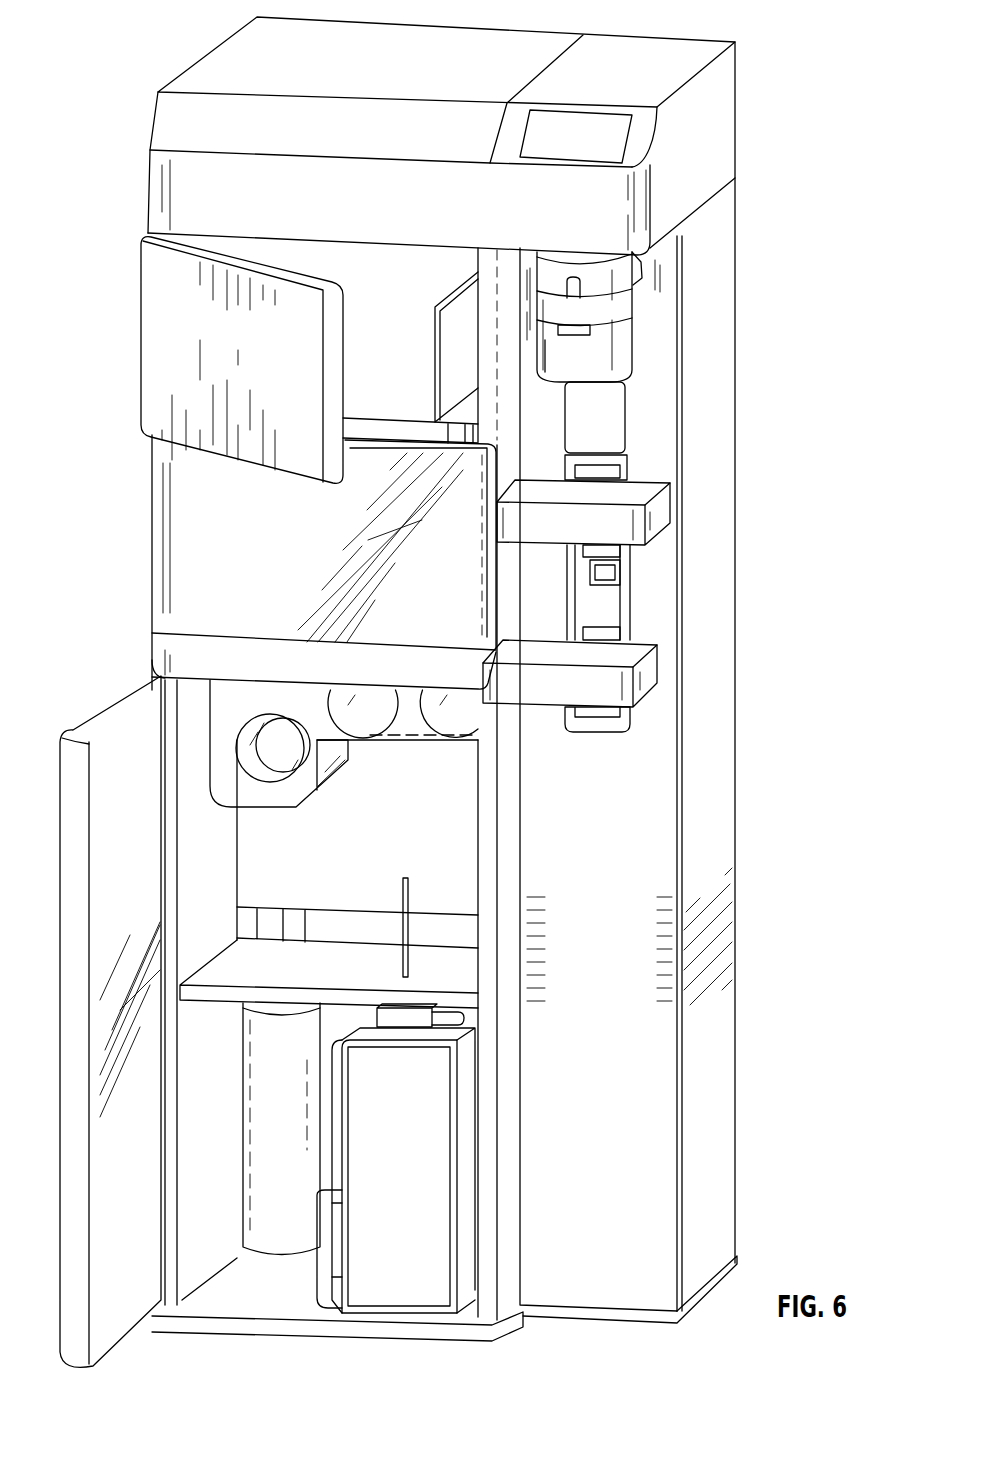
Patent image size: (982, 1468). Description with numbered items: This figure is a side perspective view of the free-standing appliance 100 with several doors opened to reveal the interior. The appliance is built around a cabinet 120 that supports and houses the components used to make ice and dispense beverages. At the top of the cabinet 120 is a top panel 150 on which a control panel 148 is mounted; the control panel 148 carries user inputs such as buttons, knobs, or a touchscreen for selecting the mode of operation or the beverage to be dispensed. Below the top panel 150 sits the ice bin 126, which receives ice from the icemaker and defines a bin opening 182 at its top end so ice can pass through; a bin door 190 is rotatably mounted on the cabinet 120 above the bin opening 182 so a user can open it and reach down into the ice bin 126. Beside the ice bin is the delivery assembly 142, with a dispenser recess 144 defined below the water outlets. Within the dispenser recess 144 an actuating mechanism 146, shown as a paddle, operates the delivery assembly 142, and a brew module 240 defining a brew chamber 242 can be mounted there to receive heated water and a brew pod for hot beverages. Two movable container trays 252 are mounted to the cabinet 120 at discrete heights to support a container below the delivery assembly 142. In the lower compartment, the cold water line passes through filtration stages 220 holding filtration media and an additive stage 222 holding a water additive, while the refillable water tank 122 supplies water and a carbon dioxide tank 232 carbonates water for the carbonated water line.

The free-standing appliance 100 is at (799, 1079).
The cabinet 120 is at (718, 830).
The water tank 122 is at (408, 1285).
The ice bin 126 is at (177, 555).
The delivery assembly 142 is at (668, 266).
The dispenser recess 144 is at (662, 596).
The actuating mechanism 146 is at (615, 425).
The control panel 148 is at (710, 147).
The top panel 150 is at (615, 135).
The bin opening 182 is at (403, 353).
The bin door 190 is at (230, 363).
The filtration stages 220 is at (366, 728).
The additive stage 222 is at (263, 769).
The carbon dioxide tank 232 is at (287, 1235).
The brew module 240 is at (628, 307).
The brew chamber 242 is at (605, 348).
The movable container tray 252 is at (660, 513).